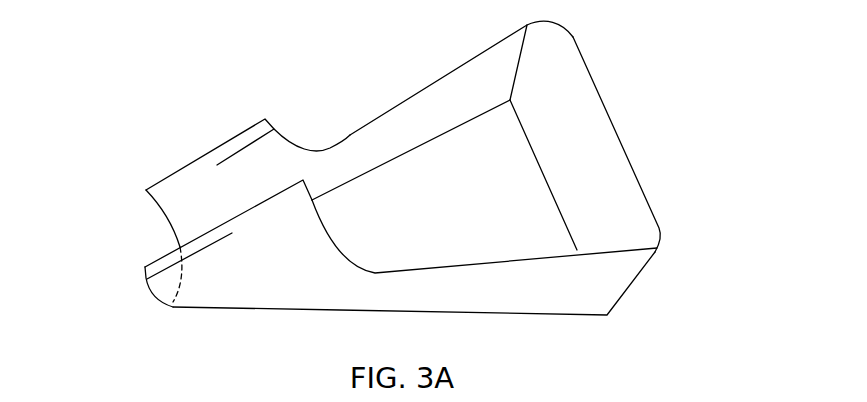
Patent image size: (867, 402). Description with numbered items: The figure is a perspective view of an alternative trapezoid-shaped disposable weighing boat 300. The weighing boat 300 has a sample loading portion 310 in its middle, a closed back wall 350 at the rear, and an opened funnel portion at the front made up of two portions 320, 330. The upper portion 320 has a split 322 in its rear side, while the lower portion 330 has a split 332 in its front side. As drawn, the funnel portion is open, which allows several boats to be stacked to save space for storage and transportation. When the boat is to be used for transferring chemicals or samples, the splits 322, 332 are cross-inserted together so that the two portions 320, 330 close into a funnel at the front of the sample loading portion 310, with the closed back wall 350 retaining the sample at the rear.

The trapezoid-shaped disposable weighing boat 300 is at (420, 31).
The sample loading portion 310 is at (498, 190).
The funnel portion 320 is at (145, 178).
The split 322 is at (229, 146).
The funnel portion 330 is at (228, 287).
The split 332 is at (142, 283).
The closed back wall 350 is at (618, 210).